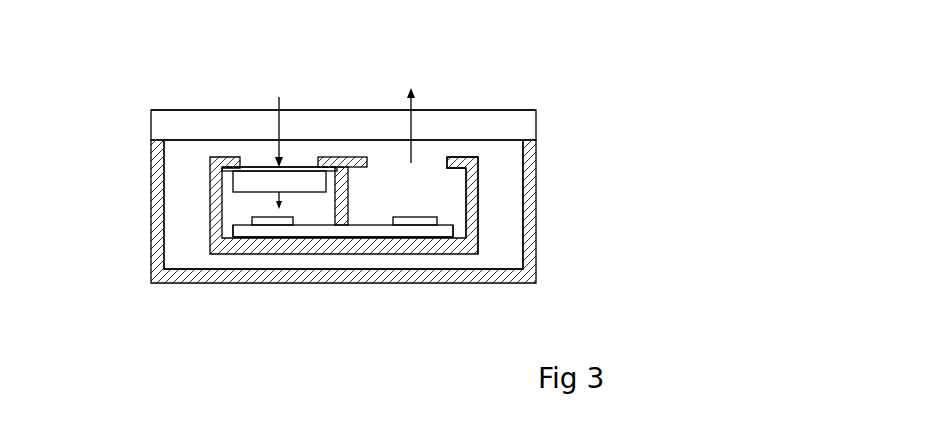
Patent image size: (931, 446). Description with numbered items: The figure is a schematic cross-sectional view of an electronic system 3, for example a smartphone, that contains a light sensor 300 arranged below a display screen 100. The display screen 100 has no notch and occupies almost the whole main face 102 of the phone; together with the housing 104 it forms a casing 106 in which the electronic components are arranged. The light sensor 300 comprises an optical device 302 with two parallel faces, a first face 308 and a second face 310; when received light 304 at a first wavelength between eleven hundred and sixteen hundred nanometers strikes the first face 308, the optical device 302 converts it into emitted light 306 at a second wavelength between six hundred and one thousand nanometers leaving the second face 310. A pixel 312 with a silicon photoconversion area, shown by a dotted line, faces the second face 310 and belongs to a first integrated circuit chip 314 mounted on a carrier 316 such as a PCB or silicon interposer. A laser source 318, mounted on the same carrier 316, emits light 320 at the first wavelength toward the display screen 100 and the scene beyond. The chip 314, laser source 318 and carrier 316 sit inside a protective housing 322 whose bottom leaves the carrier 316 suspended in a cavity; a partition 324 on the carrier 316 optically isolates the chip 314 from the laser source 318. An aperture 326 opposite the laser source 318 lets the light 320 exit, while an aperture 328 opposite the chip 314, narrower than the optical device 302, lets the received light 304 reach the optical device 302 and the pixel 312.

The electronic system 3 is at (122, 68).
The display screen 100 is at (523, 123).
The main face 102 is at (498, 108).
The housing 104 is at (537, 200).
The casing 106 is at (507, 233).
The light sensor 300 is at (193, 196).
The optical device 302 is at (266, 189).
The received light 304 is at (280, 97).
The emitted light 306 is at (282, 201).
The first face 308 is at (262, 167).
The second face 310 is at (240, 192).
The pixel 312 is at (277, 226).
The first integrated circuit chip 314 is at (252, 220).
The carrier 316 is at (328, 227).
The laser source 318 is at (447, 220).
The emitted laser light 320 is at (415, 105).
The protective housing 322 is at (478, 173).
The partition 324 is at (348, 196).
The aperture 326 is at (367, 163).
The aperture 328 is at (246, 167).